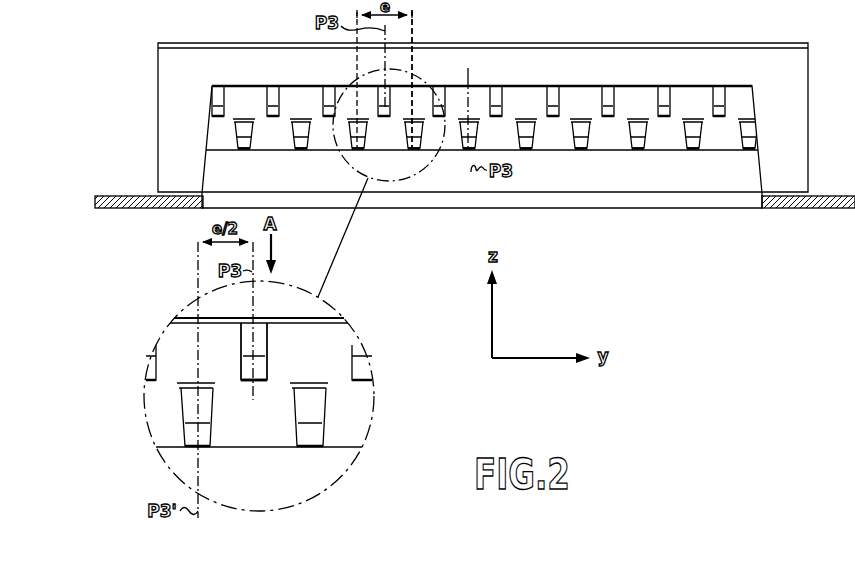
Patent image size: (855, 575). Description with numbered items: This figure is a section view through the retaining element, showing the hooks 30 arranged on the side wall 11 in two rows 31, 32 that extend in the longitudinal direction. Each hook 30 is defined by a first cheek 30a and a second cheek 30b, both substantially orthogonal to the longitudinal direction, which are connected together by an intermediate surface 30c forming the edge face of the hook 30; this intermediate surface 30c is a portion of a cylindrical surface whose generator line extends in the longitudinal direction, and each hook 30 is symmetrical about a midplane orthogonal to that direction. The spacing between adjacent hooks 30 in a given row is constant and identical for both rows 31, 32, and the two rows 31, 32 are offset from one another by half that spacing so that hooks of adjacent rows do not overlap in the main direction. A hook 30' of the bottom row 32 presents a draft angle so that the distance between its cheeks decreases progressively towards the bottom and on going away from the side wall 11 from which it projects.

The side wall 11 is at (583, 100).
The row 31 is at (203, 108).
The row 32 is at (220, 138).
The hook 30 is at (319, 233).
The hook 30' is at (273, 296).
The first cheek 30a is at (243, 341).
The second cheek 30b is at (270, 354).
The intermediate surface 30c is at (266, 355).